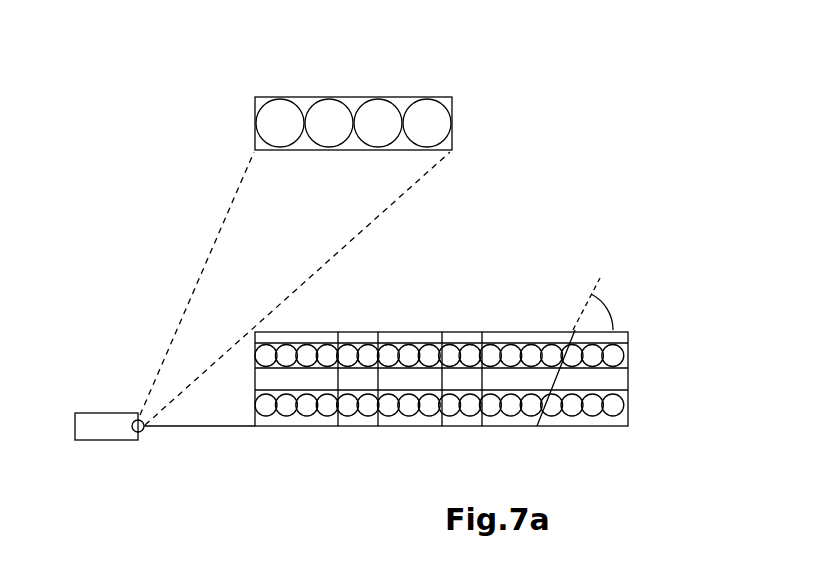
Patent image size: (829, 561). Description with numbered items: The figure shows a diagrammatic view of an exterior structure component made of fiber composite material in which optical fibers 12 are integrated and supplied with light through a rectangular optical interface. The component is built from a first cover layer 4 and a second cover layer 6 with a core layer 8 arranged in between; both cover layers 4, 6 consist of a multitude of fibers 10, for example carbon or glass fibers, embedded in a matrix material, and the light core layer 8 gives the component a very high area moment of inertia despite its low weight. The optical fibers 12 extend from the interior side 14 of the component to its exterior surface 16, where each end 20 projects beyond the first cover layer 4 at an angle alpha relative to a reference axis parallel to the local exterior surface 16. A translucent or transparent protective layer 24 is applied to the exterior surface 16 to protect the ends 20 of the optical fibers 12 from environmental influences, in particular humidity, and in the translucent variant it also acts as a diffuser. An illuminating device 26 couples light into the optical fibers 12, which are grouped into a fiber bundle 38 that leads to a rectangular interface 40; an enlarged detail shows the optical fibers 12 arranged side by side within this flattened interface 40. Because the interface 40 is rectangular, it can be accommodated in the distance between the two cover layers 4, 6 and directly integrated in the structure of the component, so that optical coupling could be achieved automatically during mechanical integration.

The first cover layer 4 is at (636, 359).
The second cover layer 6 is at (636, 403).
The core layer 8 is at (628, 384).
The fibers 10 is at (612, 356).
The optical fiber 12 is at (485, 118).
The interior side 14 is at (458, 429).
The exterior surface 16 is at (417, 329).
The end 20 is at (567, 317).
The protective layer 24 is at (508, 330).
The illuminating device 26 is at (102, 418).
The fiber bundle 38 is at (402, 103).
The rectangular interface 40 is at (374, 76).